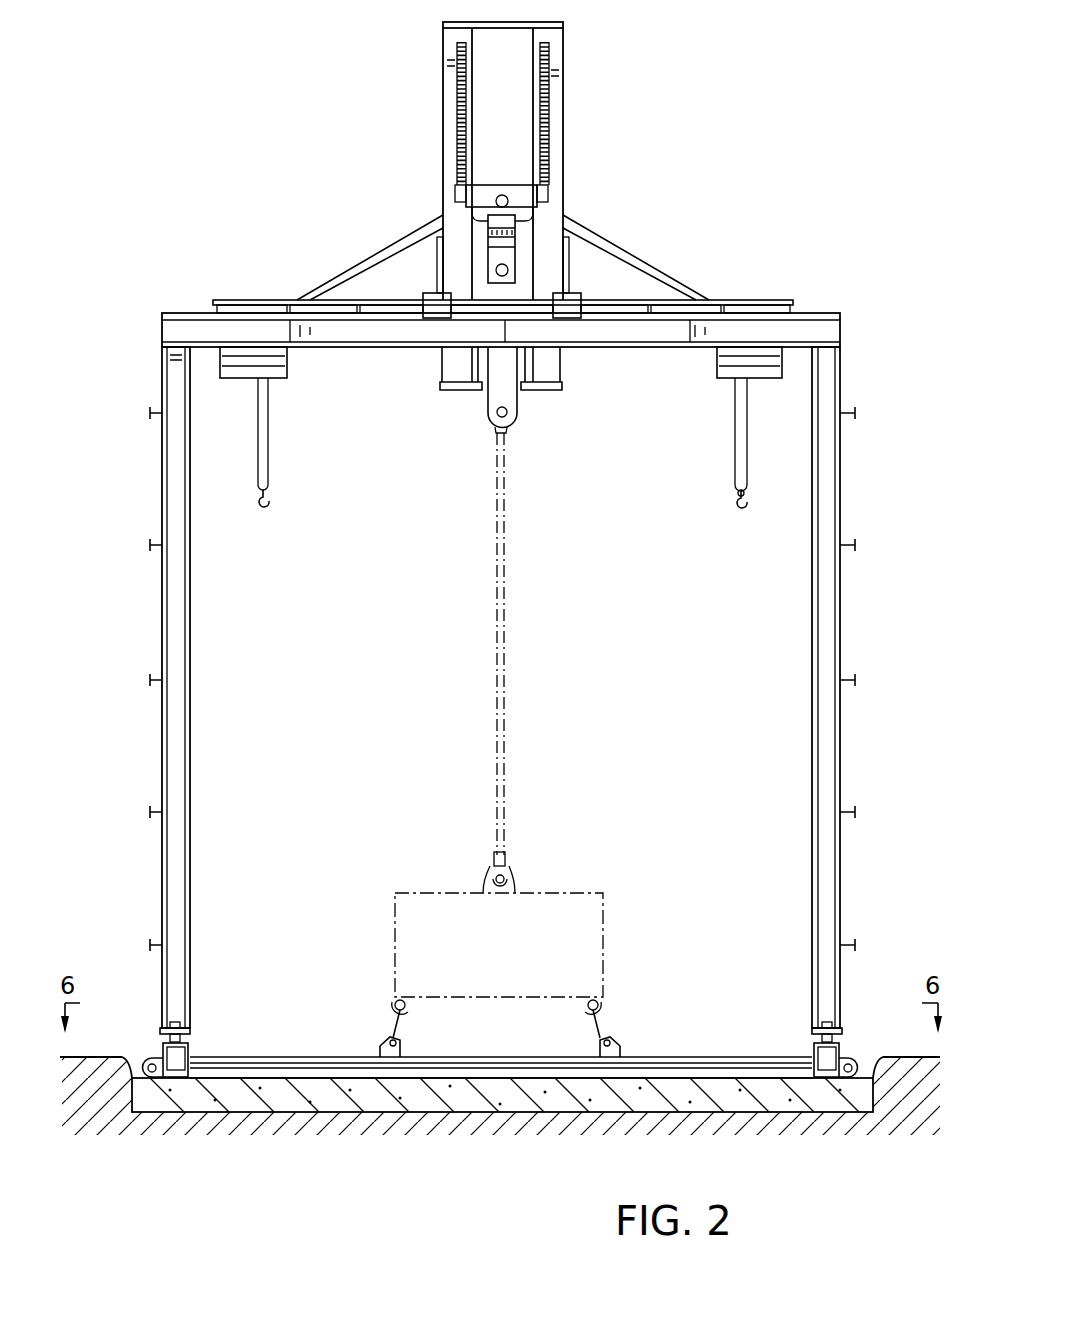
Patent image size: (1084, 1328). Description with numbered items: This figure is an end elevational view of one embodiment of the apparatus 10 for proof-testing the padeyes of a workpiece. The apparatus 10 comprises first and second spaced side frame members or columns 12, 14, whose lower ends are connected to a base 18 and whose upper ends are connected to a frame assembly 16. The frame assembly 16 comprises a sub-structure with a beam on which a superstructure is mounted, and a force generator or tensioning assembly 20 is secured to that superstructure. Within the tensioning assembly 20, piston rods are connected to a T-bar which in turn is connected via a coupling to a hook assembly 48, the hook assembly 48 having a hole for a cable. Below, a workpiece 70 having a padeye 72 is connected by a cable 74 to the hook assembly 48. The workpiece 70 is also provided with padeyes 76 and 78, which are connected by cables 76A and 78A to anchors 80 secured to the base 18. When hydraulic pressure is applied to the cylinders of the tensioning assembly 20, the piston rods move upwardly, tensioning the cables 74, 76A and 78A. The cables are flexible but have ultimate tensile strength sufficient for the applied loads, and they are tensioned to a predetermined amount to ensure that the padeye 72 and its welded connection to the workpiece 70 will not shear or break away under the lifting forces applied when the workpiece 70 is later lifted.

The apparatus 10 is at (388, 166).
The first side frame member 12 is at (150, 491).
The second side frame member 14 is at (858, 478).
The frame assembly 16 is at (737, 286).
The base 18 is at (290, 1040).
The tensioning assembly 20 is at (592, 97).
The hook assembly 48 is at (490, 407).
The workpiece 70 is at (565, 905).
The padeye 72 is at (509, 890).
The cable 74 is at (507, 655).
The padeye 76 is at (396, 1000).
The cable 76A is at (396, 1027).
The padeye 78 is at (600, 1002).
The cable 78A is at (600, 1028).
The anchors 80 is at (387, 1052).